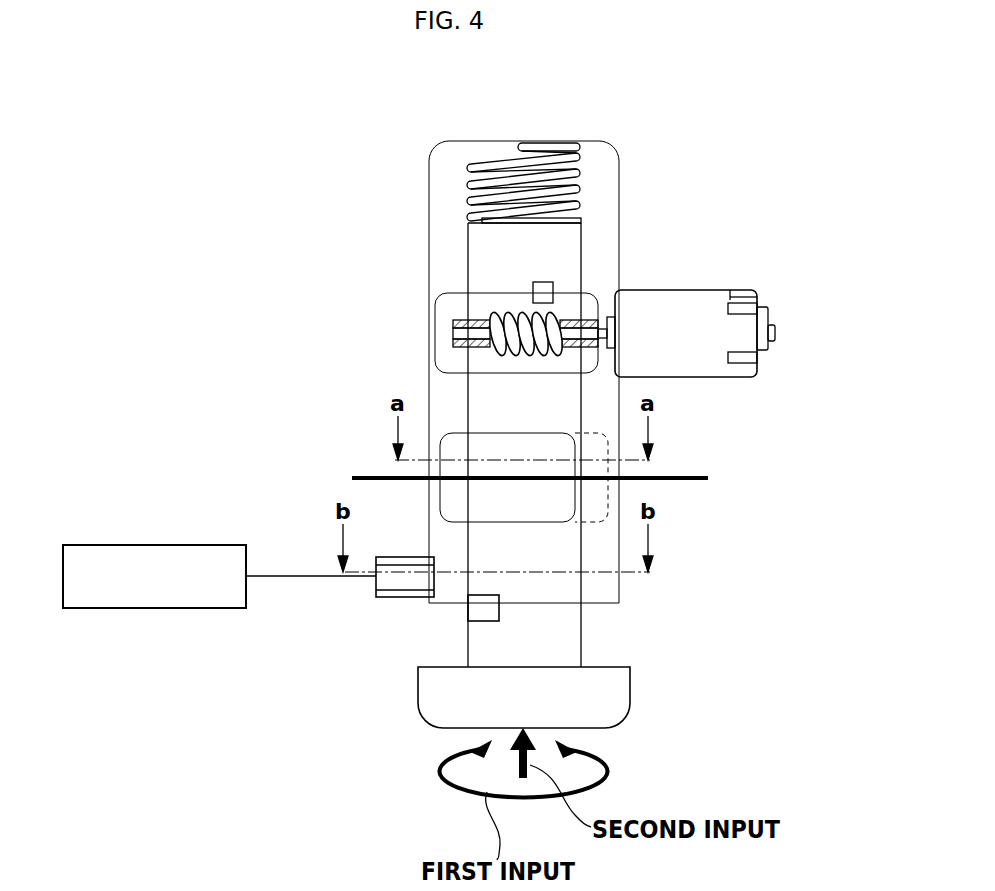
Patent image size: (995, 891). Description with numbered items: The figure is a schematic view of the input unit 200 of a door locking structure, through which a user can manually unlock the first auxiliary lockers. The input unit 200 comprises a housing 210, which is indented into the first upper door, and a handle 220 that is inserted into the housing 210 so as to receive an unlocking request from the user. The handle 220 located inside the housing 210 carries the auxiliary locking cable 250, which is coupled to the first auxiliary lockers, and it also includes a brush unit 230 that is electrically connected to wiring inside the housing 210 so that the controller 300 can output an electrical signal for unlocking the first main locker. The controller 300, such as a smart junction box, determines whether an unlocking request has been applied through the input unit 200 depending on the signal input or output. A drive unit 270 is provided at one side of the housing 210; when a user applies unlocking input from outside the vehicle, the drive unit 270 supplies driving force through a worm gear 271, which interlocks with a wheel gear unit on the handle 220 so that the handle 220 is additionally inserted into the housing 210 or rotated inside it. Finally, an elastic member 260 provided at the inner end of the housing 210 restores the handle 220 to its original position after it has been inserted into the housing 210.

The input unit 200 is at (456, 95).
The housing 210 is at (619, 168).
The handle 220 is at (631, 690).
The brush unit 230 is at (472, 615).
The auxiliary locking cable 250 is at (692, 478).
The elastic member 260 is at (468, 190).
The drive unit 270 is at (757, 305).
The worm gear 271 is at (495, 312).
The controller 300 is at (152, 545).